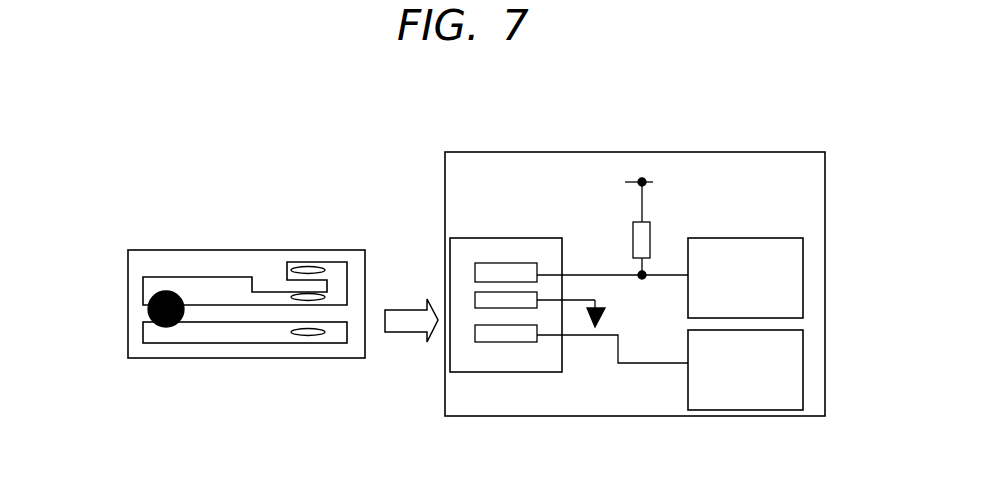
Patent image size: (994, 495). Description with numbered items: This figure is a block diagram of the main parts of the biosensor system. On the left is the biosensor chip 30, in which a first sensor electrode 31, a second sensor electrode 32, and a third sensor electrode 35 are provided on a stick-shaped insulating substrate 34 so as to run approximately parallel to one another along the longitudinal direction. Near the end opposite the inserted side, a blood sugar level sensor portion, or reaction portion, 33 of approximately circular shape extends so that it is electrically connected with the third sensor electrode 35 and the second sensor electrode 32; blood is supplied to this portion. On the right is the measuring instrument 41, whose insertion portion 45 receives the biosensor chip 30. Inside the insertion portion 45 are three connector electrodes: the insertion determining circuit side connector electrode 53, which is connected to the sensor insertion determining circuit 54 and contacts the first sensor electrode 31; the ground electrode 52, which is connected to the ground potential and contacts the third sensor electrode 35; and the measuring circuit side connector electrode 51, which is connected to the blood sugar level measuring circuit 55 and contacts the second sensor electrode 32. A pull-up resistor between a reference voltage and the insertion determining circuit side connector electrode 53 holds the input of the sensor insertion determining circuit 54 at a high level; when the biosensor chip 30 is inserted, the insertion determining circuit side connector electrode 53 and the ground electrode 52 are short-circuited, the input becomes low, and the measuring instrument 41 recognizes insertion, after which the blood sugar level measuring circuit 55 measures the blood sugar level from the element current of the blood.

The biosensor chip 30 is at (180, 230).
The first sensor electrode 31 is at (306, 265).
The second sensor electrode 32 is at (308, 336).
The blood sugar level sensor portion (reaction portion) 33 is at (162, 328).
The insulating substrate 34 is at (130, 273).
The third sensor electrode 35 is at (292, 296).
The measuring instrument 41 is at (740, 135).
The insertion portion 45 is at (452, 270).
The measuring circuit side connector electrode 51 is at (498, 338).
The ground electrode 52 is at (508, 297).
The insertion determining circuit side connector electrode 53 is at (485, 272).
The sensor insertion determining circuit 54 is at (803, 270).
The blood sugar level measuring circuit 55 is at (803, 355).